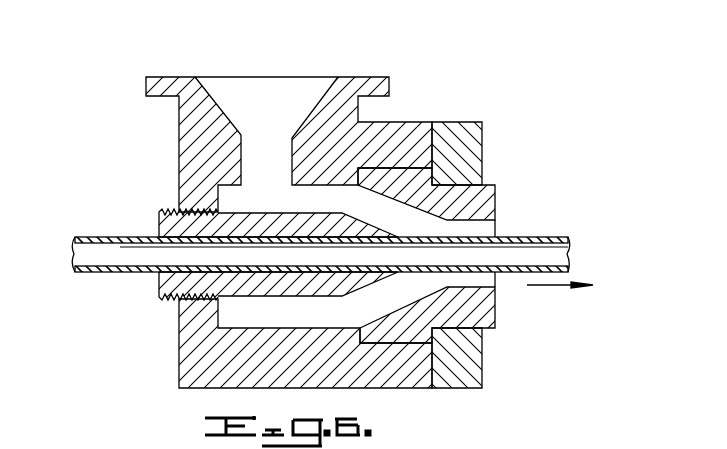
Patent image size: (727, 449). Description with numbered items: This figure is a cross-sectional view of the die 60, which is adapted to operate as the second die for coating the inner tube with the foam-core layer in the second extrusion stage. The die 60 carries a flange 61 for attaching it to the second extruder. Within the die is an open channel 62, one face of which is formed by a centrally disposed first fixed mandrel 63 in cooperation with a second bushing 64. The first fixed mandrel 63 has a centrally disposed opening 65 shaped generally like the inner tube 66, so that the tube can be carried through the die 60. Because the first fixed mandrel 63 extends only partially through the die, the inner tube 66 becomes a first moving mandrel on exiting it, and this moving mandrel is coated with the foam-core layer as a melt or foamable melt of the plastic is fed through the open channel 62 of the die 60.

The die 60 is at (430, 88).
The flange 61 is at (168, 77).
The open channel 62 is at (408, 208).
The first fixed mandrel 63 is at (162, 212).
The second bushing 64 is at (497, 203).
The centrally disposed opening 65 is at (85, 257).
The inner tube 66 is at (553, 237).